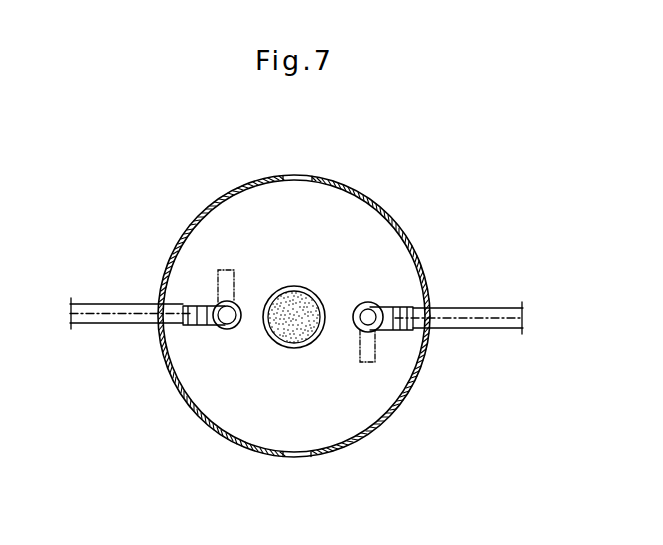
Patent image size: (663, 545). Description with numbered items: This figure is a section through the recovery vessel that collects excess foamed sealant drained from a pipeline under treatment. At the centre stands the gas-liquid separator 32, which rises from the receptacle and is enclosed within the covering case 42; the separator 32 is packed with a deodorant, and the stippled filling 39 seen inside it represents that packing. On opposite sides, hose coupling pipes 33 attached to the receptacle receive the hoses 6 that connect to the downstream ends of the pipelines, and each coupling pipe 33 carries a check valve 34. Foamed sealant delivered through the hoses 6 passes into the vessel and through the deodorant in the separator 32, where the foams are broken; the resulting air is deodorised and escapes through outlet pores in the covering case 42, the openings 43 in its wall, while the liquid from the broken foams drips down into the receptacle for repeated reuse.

The hose 6 is at (97, 304).
The gas-liquid separator 32 is at (287, 285).
The hose coupling pipe 33 is at (383, 333).
The check valve 34 is at (352, 326).
The porous material 39 is at (297, 308).
The covering case 42 is at (381, 207).
The window 43 is at (298, 175).